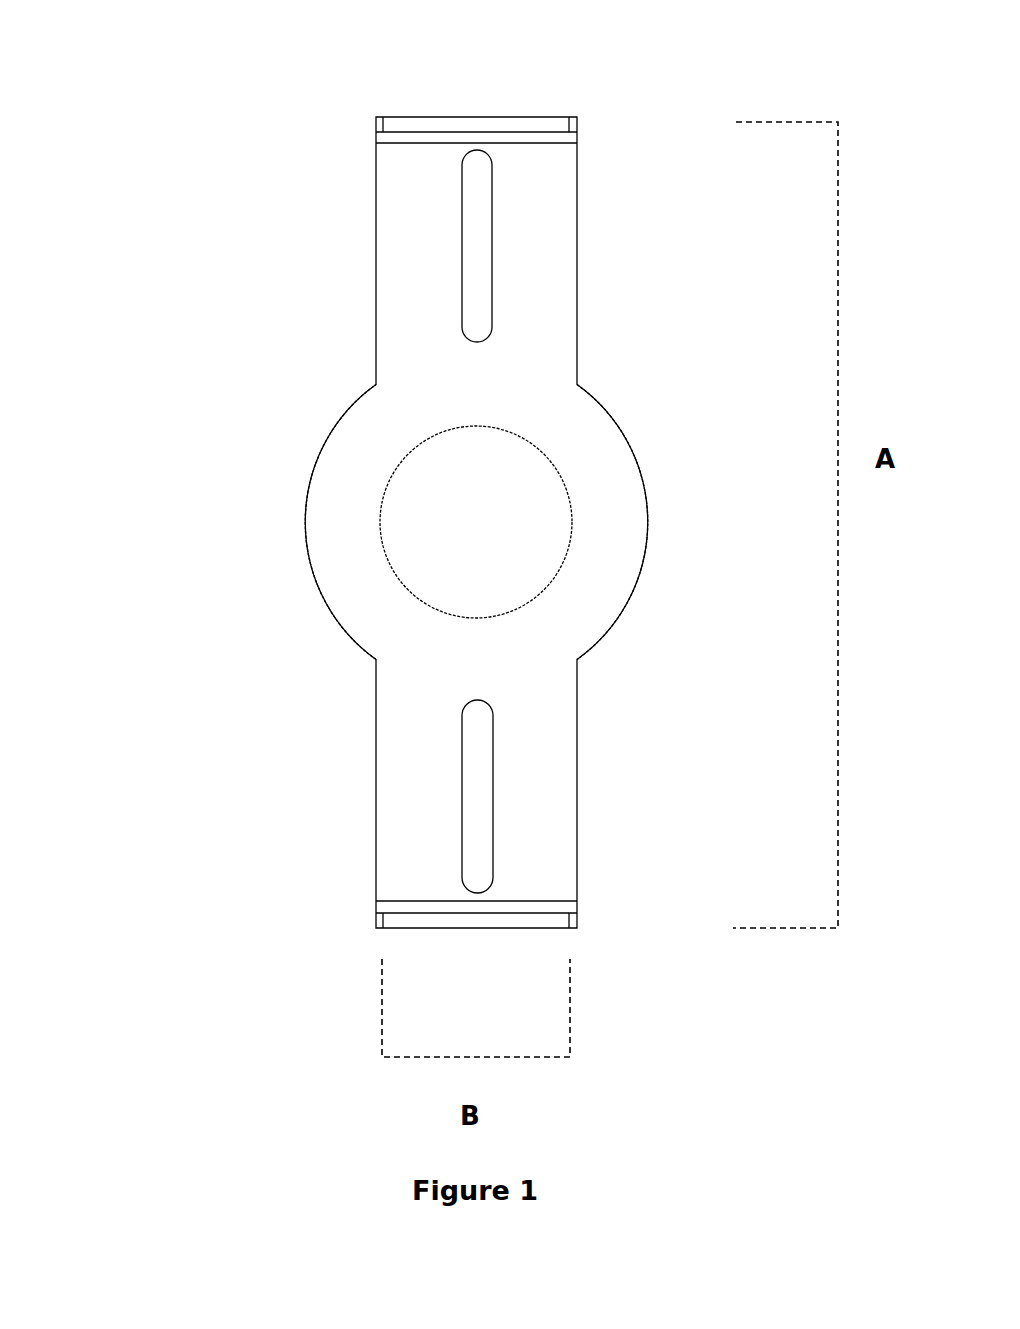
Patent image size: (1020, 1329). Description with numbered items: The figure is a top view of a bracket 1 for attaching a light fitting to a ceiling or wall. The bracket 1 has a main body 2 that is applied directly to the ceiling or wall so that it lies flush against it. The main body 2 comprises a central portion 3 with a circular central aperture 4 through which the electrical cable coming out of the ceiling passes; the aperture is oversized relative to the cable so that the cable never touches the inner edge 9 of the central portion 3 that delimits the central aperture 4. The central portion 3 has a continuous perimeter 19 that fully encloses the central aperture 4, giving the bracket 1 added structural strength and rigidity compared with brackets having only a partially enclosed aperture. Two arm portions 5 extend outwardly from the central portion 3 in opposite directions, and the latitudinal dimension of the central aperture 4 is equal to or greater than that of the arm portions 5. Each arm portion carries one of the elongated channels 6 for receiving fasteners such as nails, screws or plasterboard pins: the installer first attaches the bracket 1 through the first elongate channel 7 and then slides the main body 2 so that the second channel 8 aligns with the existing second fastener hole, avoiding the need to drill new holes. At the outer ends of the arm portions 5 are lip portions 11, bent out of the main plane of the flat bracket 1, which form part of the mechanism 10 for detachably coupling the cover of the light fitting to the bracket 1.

The bracket 1 is at (170, 132).
The main body 2 is at (533, 362).
The central portion 3 is at (355, 533).
The central aperture 4 is at (472, 520).
The arm portions 5 is at (387, 300).
The elongated channels 6 is at (477, 485).
The first elongate channel 7 is at (478, 246).
The second channel 8 is at (473, 759).
The inner edge 9 is at (557, 472).
The mechanism 10 is at (404, 512).
The lip portions 11 is at (462, 117).
The continuous perimeter 19 is at (380, 505).